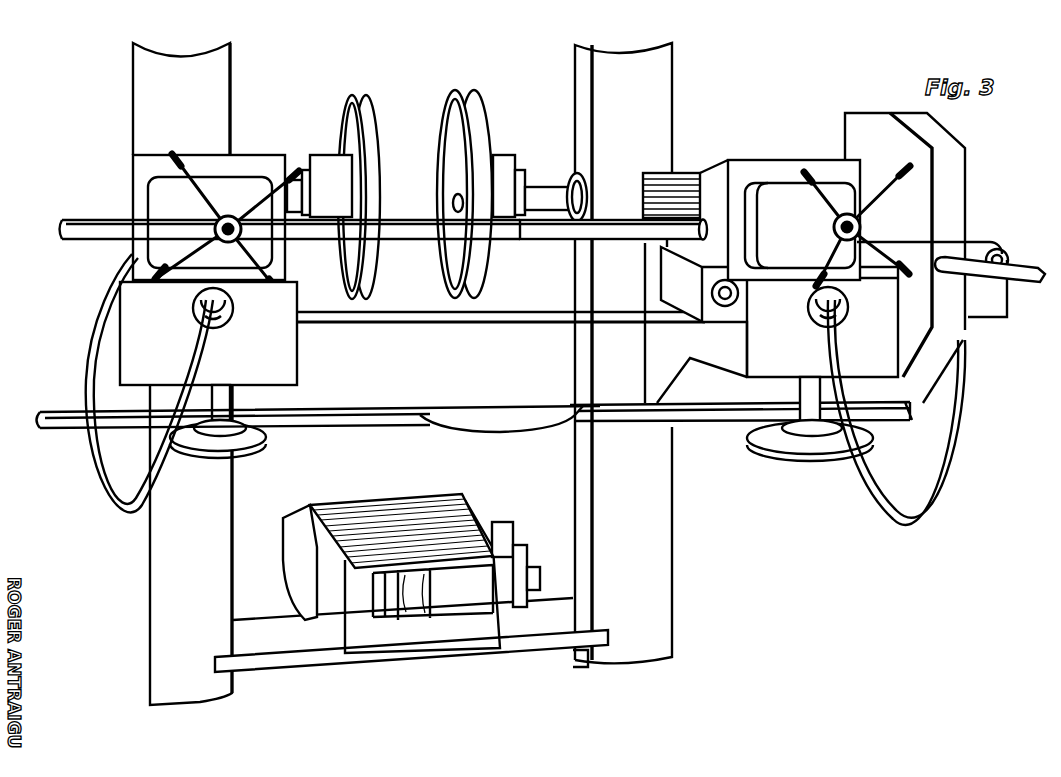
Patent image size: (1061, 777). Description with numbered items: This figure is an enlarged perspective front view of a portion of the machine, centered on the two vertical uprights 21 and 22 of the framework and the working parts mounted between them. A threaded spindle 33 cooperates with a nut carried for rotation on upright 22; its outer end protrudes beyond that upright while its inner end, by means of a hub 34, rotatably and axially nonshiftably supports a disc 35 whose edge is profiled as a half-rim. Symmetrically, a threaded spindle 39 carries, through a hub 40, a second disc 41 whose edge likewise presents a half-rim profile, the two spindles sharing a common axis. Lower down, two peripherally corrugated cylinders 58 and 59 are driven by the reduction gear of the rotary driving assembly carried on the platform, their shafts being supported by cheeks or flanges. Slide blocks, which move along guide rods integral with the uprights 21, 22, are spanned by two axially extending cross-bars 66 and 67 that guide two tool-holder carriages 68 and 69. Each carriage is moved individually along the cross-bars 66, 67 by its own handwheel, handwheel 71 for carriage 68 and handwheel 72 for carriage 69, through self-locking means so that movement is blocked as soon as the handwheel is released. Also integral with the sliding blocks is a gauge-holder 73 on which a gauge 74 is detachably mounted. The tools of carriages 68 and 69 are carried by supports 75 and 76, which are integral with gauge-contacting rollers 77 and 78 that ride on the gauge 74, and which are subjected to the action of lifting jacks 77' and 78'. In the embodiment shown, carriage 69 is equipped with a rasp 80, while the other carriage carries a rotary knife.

The vertical upright 21 is at (655, 113).
The vertical upright 22 is at (167, 107).
The threaded spindle 33 is at (293, 202).
The hub 34 is at (328, 177).
The disc 35 is at (352, 127).
The threaded spindle 39 is at (540, 203).
The hub 40 is at (502, 173).
The disc 41 is at (477, 102).
The peripherally corrugated cylinder 58 is at (410, 513).
The peripherally corrugated cylinder 59 is at (473, 535).
The cross-bar 66 is at (533, 222).
The cross-bar 67 is at (490, 232).
The tool-holder carriage 68 is at (168, 197).
The tool-holder carriage 69 is at (773, 205).
The handwheel 71 is at (173, 165).
The handwheel 72 is at (805, 170).
The gauge-holder 73 is at (287, 423).
The gauge 74 is at (497, 416).
The support 75 is at (263, 350).
The support 76 is at (780, 358).
The gauge-contacting roller 77 is at (176, 383).
The lifting jack 77' is at (184, 310).
The gauge-contacting roller 78 is at (856, 414).
The lifting jack 78' is at (847, 320).
The rasp 80 is at (682, 172).